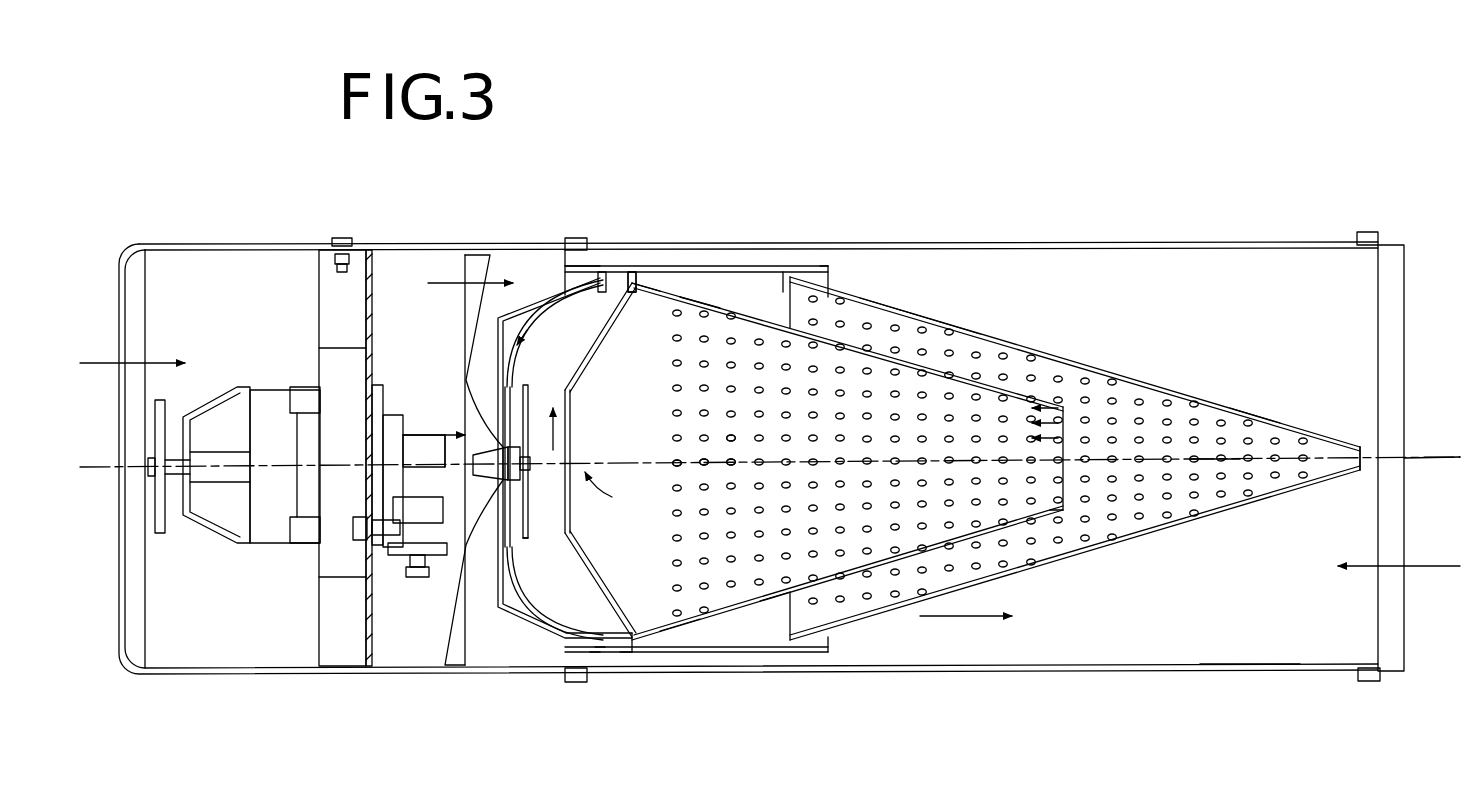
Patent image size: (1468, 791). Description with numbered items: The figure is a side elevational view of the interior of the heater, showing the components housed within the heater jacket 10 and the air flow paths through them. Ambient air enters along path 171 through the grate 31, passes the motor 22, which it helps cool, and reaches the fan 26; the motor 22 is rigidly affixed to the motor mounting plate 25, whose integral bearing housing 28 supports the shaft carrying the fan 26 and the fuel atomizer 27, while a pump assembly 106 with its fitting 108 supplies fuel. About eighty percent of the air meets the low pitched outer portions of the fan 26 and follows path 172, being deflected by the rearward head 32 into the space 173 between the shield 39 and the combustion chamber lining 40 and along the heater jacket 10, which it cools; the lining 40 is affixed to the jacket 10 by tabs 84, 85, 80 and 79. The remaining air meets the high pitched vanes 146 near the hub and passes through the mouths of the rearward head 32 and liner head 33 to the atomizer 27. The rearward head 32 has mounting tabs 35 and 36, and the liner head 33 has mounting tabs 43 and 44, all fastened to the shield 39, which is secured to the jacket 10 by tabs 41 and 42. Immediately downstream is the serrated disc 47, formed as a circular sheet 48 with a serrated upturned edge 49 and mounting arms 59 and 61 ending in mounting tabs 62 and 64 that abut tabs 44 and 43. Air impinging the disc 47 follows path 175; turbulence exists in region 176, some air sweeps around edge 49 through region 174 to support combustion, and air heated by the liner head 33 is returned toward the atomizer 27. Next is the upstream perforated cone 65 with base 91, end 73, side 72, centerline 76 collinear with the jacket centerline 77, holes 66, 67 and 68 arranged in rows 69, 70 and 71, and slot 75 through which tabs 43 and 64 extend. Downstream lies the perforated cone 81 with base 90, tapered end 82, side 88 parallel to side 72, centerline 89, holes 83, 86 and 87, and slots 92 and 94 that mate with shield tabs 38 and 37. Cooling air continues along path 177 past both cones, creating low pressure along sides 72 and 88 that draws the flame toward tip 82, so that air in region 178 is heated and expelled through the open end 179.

The heater jacket 10 is at (1188, 240).
The motor 22 is at (265, 545).
The motor mounting plate 25 is at (374, 264).
The fan 26 is at (477, 260).
The fuel atomizer 27 is at (535, 410).
The bearing housing 28 is at (388, 425).
The grate 31 is at (117, 628).
The rearward head 32 is at (516, 312).
The liner head 33 is at (583, 338).
The mounting tab 35 is at (604, 272).
The mounting tab 36 is at (597, 655).
The tab 37 is at (802, 284).
The tab 38 is at (818, 637).
The shield 39 is at (726, 266).
The combustion chamber lining 40 is at (1238, 661).
The tab 41 is at (578, 238).
The tab 42 is at (598, 668).
The mounting tab 43 is at (634, 272).
The mounting tab 44 is at (637, 665).
The serrated disc 47 is at (553, 545).
The circular sheet 48 is at (557, 480).
The serrated upturned edge 49 is at (565, 392).
The mounting arm 59 is at (612, 582).
The mounting arm 61 is at (628, 295).
The mounting tab 62 is at (668, 636).
The mounting tab 64 is at (645, 285).
The upstream circular perforated cone 65 is at (774, 598).
The hole 66 is at (672, 462).
The hole 67 is at (700, 460).
The hole 68 is at (735, 458).
The row of holes 69 is at (1063, 413).
The row of holes 70 is at (1095, 415).
The row of holes 71 is at (1130, 440).
The side of cone 72 is at (786, 322).
The end 73 is at (1058, 500).
The slot 75 is at (660, 296).
The centerline 76 is at (738, 455).
The centerline 77 is at (1440, 458).
The tab 79 is at (1367, 230).
The tab 80 is at (1368, 683).
The downstream perforated cone 81 is at (1258, 418).
The end 82 is at (1362, 455).
The hole 83 is at (880, 304).
The tab 84 is at (583, 240).
The tab 85 is at (566, 680).
The hole 86 is at (925, 318).
The hole 87 is at (965, 330).
The side of cone 88 is at (1025, 347).
The centerline 89 is at (1211, 463).
The base 90 is at (790, 292).
The base 91 is at (626, 668).
The slot 92 is at (820, 654).
The slot 94 is at (830, 294).
The pump assembly 106 is at (428, 420).
The fitting 108 is at (433, 578).
The high pitched vanes 146 is at (470, 497).
The path 171 is at (104, 360).
The path 172 is at (440, 283).
The space / path 173 is at (447, 455).
The region 174 is at (618, 495).
The path 175 is at (555, 437).
The region / path 176 is at (565, 268).
The path 177 is at (940, 618).
The region 178 is at (1399, 550).
The open end 179 is at (1400, 292).